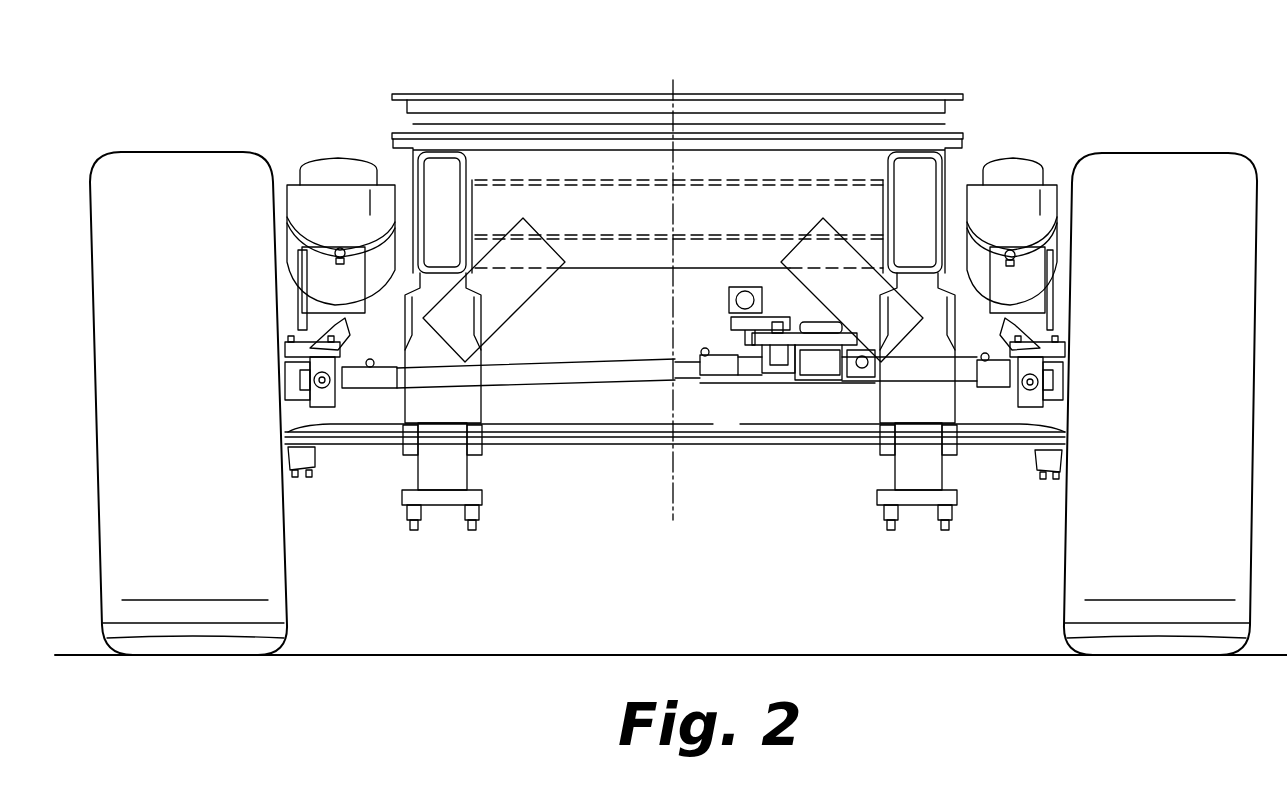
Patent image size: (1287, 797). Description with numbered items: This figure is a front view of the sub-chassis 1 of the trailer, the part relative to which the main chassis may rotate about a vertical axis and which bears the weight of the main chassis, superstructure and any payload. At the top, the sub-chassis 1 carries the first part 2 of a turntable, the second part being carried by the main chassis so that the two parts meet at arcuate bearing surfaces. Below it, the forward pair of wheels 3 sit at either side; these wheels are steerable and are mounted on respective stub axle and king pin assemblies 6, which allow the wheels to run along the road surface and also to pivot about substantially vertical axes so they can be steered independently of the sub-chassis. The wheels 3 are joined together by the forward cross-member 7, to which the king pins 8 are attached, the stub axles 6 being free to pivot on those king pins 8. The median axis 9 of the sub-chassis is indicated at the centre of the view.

The sub-chassis 1 is at (334, 84).
The first part of turntable 2 is at (947, 113).
The forward pair of wheels 3 is at (235, 163).
The stub axle and king pin assembly 6 is at (328, 465).
The forward cross-member 7 is at (723, 413).
The king pin 8 is at (300, 472).
The median axis 9 is at (672, 306).